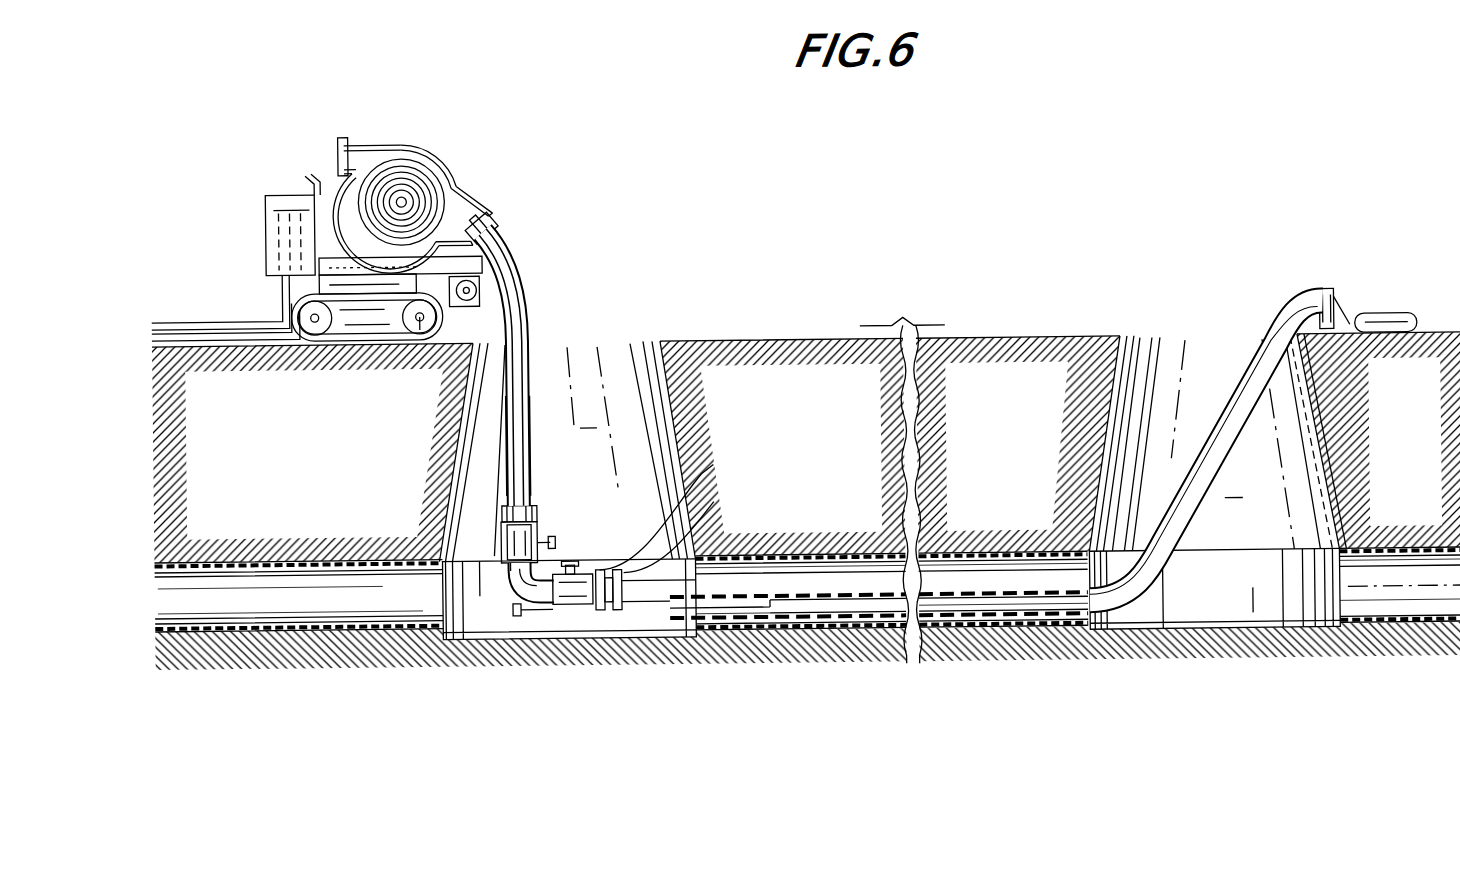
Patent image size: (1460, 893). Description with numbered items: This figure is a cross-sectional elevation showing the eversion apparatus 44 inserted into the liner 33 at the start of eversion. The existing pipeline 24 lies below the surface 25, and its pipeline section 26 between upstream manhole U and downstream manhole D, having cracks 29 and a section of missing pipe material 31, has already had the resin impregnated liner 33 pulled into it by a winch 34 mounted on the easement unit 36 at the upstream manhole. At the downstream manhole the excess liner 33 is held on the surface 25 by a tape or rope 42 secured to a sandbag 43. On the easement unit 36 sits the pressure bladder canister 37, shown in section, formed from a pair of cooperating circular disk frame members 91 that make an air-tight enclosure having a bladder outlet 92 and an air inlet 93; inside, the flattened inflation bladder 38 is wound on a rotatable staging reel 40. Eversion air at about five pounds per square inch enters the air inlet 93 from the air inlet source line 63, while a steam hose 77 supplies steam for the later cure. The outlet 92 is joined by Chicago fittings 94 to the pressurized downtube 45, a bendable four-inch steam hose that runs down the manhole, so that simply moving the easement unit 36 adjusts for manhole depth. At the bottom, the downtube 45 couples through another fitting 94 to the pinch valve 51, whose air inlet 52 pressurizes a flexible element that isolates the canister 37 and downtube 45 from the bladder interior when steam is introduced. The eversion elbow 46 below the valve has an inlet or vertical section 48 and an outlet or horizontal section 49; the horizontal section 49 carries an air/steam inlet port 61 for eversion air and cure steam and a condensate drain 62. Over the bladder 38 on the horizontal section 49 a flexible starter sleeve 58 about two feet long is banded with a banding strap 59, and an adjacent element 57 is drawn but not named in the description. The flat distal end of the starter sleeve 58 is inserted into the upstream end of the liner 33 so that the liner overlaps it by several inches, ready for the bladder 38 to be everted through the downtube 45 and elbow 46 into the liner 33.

The existing pipeline 24 is at (283, 560).
The surface 25 is at (790, 345).
The pipeline section 26 is at (941, 560).
The cracks 29 is at (763, 563).
The section of missing pipe material 31 is at (985, 560).
The liner 33 is at (856, 600).
The winch 34 is at (527, 292).
The easement unit 36 is at (292, 210).
The pressure bladder canister 37 is at (396, 171).
The inflation bladder 38 is at (612, 618).
The staging reel 40 is at (406, 201).
The tape or rope 42 is at (1337, 303).
The sandbag 43 is at (1400, 326).
The eversion apparatus 44 is at (490, 528).
The pressurized downtube 45 is at (530, 424).
The eversion elbow 46 is at (520, 592).
The vertical section 48 is at (506, 580).
The horizontal section 49 is at (571, 610).
The pinch valve 51 is at (524, 548).
The air inlet 52 is at (552, 546).
The cable 57 is at (700, 480).
The starter sleeve 58 is at (640, 608).
The banding strap 59 is at (712, 508).
The air/steam inlet port 61 is at (572, 567).
The condensate drain 62 is at (524, 620).
The air inlet source line 63 is at (228, 348).
The steam hose 77 is at (229, 323).
The circular disk frame members 91 is at (403, 157).
The bladder outlet 92 is at (470, 217).
The air inlet 93 is at (341, 145).
The Chicago fittings 94 is at (496, 225).